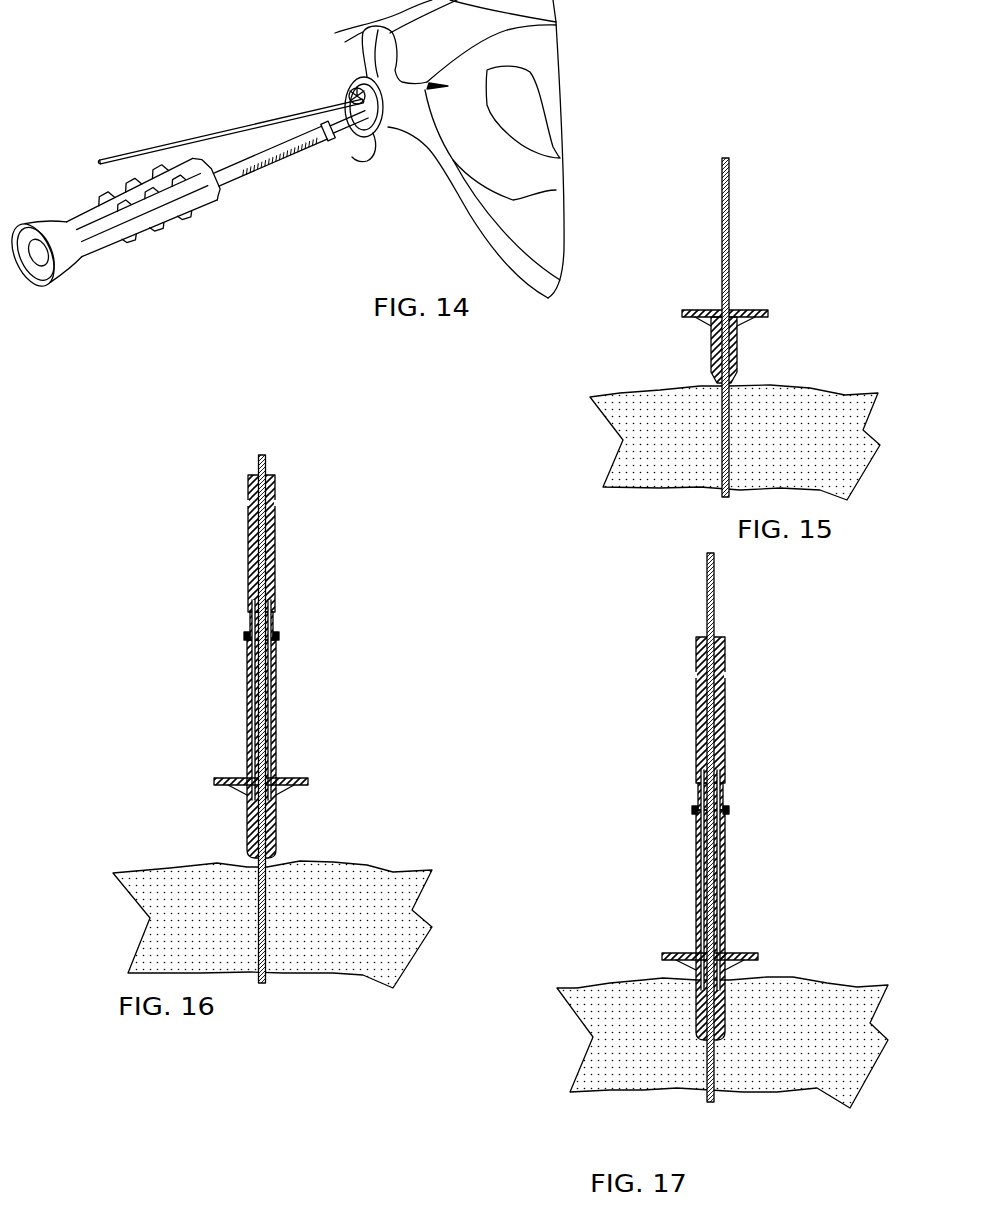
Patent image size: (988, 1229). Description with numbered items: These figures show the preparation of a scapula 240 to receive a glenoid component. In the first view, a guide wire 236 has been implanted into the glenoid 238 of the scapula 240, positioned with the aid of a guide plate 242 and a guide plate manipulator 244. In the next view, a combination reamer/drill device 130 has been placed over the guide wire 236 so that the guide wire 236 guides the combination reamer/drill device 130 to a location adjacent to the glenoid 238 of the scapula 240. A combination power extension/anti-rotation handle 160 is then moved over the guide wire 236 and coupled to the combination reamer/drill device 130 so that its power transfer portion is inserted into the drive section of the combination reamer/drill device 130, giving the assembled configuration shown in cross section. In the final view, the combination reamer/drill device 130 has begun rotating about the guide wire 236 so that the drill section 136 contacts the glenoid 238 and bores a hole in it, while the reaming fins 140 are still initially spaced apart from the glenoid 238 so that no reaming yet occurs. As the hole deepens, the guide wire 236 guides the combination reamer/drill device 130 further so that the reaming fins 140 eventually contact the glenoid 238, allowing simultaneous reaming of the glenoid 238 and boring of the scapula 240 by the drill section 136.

In FIG. 15, the combination reamer/drill device 130 is at (737, 347).
In FIG. 16, the combination reamer/drill device 130 is at (300, 778).
In FIG. 17, the combination reamer/drill device 130 is at (743, 955).
In FIG. 16, the drill section 136 is at (247, 830).
In FIG. 17, the drill section 136 is at (695, 1013).
In FIG. 16, the reaming fins 140 is at (237, 793).
In FIG. 17, the reaming fins 140 is at (690, 967).
In FIG. 16, the combination power extension/anti-rotation handle 160 is at (307, 594).
In FIG. 17, the combination power extension/anti-rotation handle 160 is at (710, 725).
In FIG. 14, the guide wire 236 is at (220, 132).
In FIG. 15, the guide wire 236 is at (728, 247).
In FIG. 16, the guide wire 236 is at (258, 983).
In FIG. 17, the guide wire 236 is at (710, 1100).
In FIG. 14, the glenoid 238 is at (345, 42).
In FIG. 15, the glenoid 238 is at (800, 398).
In FIG. 16, the glenoid 238 is at (333, 862).
In FIG. 17, the glenoid 238 is at (828, 987).
In FIG. 14, the scapula 240 is at (562, 72).
In FIG. 14, the guide plate 242 is at (378, 158).
In FIG. 14, the guide plate manipulator 244 is at (182, 222).